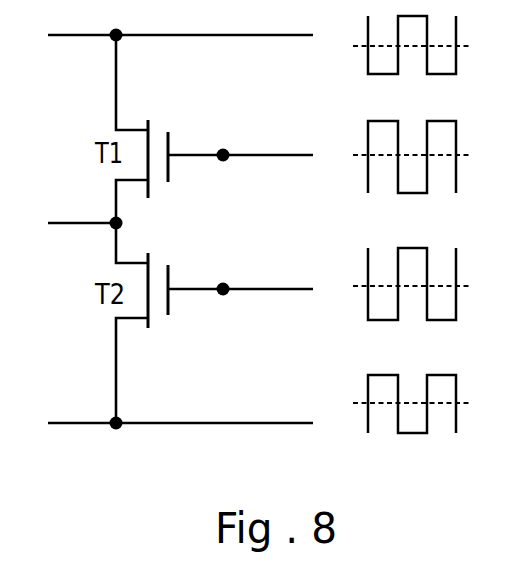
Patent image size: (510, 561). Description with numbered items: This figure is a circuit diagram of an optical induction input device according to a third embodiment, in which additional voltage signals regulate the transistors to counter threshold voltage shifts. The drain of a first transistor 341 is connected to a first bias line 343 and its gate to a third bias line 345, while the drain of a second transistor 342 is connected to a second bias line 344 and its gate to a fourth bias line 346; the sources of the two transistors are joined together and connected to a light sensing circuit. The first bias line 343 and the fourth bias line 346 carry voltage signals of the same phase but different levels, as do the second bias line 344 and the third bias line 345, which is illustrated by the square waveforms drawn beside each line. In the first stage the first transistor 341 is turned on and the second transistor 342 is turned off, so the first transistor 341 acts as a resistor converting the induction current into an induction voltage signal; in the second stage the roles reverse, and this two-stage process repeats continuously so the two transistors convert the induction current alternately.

The first transistor 341 is at (172, 127).
The second transistor 342 is at (172, 261).
The first bias line 343 is at (295, 37).
The second bias line 344 is at (290, 401).
The third bias line 345 is at (295, 157).
The fourth bias line 346 is at (290, 268).